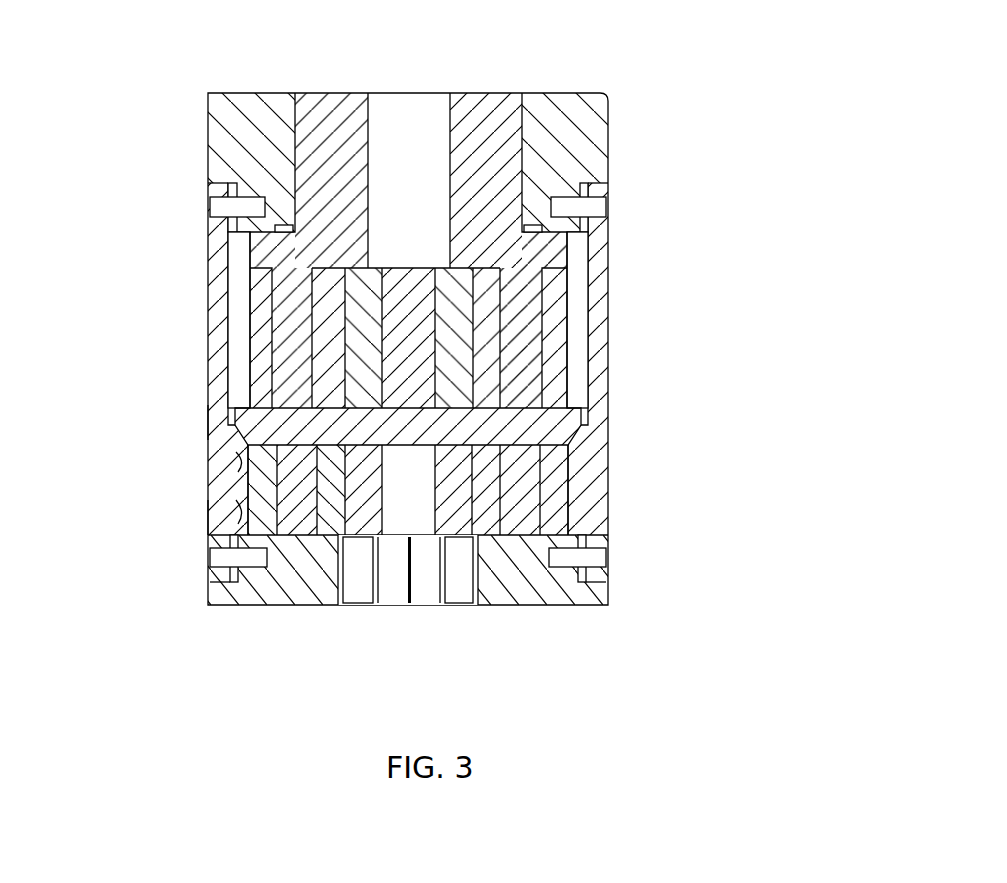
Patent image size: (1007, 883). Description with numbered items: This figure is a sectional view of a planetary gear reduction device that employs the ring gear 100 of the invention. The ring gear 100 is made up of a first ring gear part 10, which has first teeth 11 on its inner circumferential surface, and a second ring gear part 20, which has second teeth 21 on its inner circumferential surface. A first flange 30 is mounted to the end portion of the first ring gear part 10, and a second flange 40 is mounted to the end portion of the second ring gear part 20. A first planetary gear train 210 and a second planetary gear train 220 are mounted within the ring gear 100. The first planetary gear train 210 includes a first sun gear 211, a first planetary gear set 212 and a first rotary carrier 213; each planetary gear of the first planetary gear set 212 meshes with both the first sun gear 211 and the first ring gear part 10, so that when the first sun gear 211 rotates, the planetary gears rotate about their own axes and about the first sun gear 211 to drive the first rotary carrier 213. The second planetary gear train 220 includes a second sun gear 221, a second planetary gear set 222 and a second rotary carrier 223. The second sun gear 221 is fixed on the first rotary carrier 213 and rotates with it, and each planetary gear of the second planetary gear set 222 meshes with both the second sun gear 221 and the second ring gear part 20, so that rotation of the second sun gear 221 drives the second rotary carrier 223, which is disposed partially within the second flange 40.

The first ring gear part 10 is at (218, 520).
The first teeth 11 is at (237, 483).
The second ring gear part 20 is at (218, 246).
The second teeth 21 is at (232, 327).
The first flange 30 is at (577, 603).
The second flange 40 is at (246, 92).
The ring gear 100 is at (207, 422).
The first planetary gear train 210 is at (764, 430).
The first sun gear 211 is at (455, 504).
The first planetary gear set 212 is at (548, 477).
The first rotary carrier 213 is at (520, 428).
The second planetary gear train 220 is at (778, 200).
The second sun gear 221 is at (457, 318).
The second planetary gear set 222 is at (565, 248).
The second rotary carrier 223 is at (487, 205).